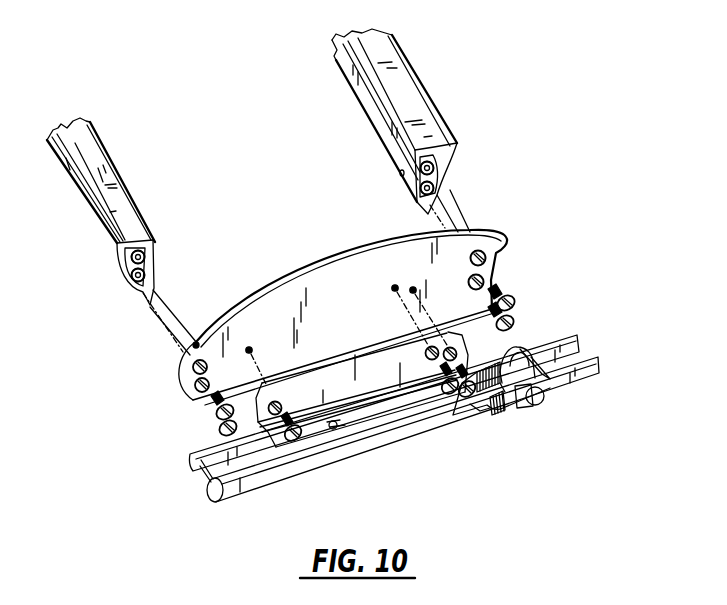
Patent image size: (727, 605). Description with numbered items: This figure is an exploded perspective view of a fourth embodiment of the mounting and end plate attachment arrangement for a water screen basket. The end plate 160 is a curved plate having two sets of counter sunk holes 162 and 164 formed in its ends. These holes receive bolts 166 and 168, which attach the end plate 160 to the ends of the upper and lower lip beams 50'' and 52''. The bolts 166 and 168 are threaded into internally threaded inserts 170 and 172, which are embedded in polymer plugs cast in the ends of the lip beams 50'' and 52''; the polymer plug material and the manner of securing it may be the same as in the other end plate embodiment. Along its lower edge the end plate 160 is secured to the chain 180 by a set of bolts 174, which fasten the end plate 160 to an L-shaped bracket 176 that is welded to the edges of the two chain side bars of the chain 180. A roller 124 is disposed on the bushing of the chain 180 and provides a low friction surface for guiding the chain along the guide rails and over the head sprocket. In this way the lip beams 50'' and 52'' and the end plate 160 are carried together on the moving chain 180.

The upper lip beam 50'' is at (127, 236).
The lower lip beam 52'' is at (425, 130).
The end plate 160 is at (353, 243).
The counter sunk holes 162 is at (483, 279).
The counter sunk holes 164 is at (200, 384).
The bolts 166 is at (218, 408).
The bolts 168 is at (513, 310).
The internally threaded insert 170 is at (140, 266).
The internally threaded insert 172 is at (433, 187).
The bolts 174 is at (297, 440).
The L-shaped bracket 176 is at (337, 430).
The chain 180 is at (478, 415).
The roller 124 is at (518, 348).